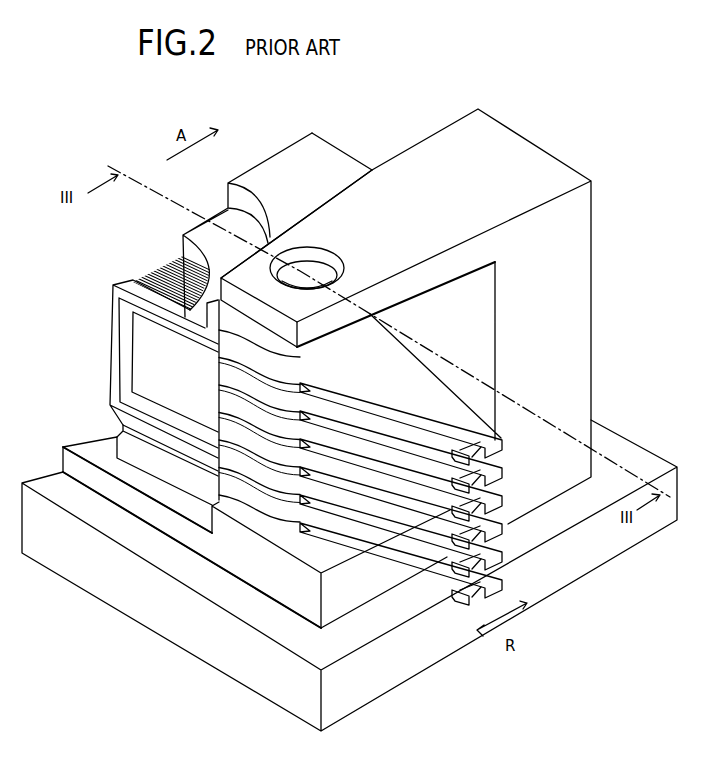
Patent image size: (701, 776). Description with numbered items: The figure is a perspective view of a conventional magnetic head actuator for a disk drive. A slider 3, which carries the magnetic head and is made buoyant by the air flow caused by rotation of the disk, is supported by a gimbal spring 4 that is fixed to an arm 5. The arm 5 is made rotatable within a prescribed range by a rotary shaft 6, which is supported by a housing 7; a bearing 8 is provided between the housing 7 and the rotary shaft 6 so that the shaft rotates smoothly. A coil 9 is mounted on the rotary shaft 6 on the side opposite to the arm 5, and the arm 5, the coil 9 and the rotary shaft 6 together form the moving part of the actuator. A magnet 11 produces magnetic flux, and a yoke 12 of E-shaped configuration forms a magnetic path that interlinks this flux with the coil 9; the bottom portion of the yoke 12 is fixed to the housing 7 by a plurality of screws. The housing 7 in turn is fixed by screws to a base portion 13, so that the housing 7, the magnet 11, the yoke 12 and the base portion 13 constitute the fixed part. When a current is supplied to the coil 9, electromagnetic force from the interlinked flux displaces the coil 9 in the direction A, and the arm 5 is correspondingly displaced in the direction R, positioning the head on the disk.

The slider 3 is at (453, 600).
The gimbal spring 4 is at (502, 568).
The arm 5 is at (432, 388).
The rotary shaft 6 is at (320, 277).
The housing 7 is at (533, 163).
The bearing 8 is at (310, 260).
The coil 9 is at (128, 280).
The magnet 11 is at (230, 230).
The yoke 12 is at (160, 475).
The base portion 13 is at (422, 656).